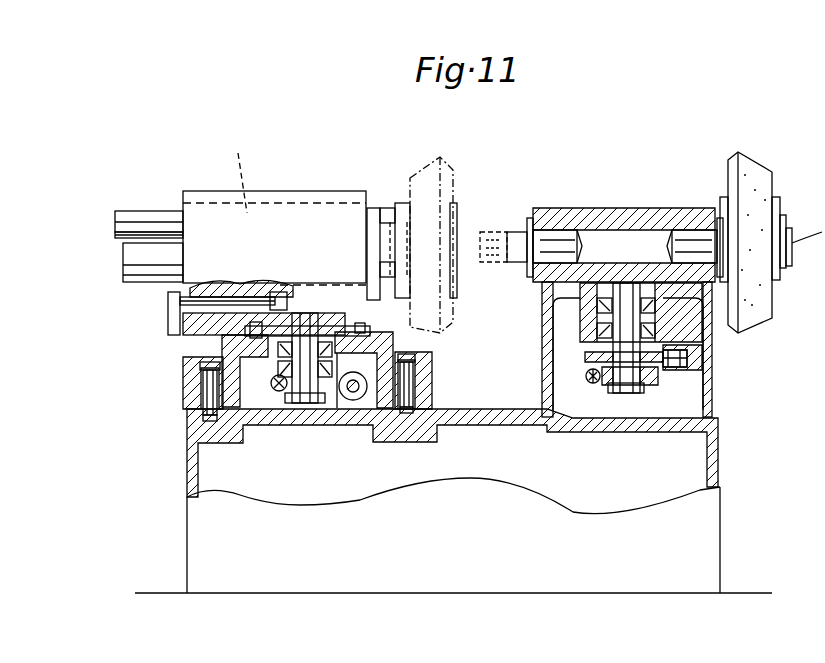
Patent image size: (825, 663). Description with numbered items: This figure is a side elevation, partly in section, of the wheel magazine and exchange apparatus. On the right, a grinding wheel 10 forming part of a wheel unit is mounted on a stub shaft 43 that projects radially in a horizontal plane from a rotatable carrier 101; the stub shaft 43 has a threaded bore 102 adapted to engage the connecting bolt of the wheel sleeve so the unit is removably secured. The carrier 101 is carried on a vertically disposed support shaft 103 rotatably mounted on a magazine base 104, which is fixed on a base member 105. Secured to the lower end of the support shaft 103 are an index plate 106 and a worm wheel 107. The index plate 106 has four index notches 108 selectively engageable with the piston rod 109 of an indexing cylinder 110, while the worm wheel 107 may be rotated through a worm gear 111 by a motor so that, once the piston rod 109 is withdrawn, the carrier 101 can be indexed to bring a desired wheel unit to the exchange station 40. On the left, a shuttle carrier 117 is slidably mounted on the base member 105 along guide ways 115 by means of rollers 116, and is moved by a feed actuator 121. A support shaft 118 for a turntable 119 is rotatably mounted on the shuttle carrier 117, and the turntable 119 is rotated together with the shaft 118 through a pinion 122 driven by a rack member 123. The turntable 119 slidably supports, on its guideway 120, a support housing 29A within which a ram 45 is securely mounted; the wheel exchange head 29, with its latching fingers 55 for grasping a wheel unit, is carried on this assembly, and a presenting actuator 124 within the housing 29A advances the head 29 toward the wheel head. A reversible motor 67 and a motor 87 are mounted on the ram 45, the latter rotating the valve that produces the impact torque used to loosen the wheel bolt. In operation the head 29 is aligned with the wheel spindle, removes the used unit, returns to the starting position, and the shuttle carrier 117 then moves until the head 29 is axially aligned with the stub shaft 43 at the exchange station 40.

The wheel 10 is at (758, 165).
The wheel exchange head 29 is at (270, 183).
The support casing 29A is at (210, 193).
The exchange station 40 is at (493, 276).
The stub shaft 43 is at (555, 242).
The ram 45 is at (239, 173).
The latching fingers 55 is at (386, 210).
The reversible motor 67 is at (124, 262).
The motor 87 is at (116, 221).
The rotatable carrier 101 is at (622, 225).
The threaded bore 102 is at (489, 274).
The support shaft 103 is at (626, 395).
The magazine base 104 is at (552, 397).
The base member 105 is at (210, 530).
The index plate 106 is at (597, 353).
The worm wheel 107 is at (655, 393).
The index notches 108 is at (585, 357).
The piston rod 109 is at (672, 350).
The indexing cylinder 110 is at (712, 360).
The worm gear 111 is at (586, 377).
The guide ways 115 is at (208, 406).
The rollers 116 is at (205, 387).
The shuttle carrier 117 is at (232, 347).
The support shaft 118 is at (302, 315).
The turntable 119 is at (185, 324).
The guideway 120 is at (175, 300).
The feed actuator 121 is at (360, 408).
The pinion 122 is at (318, 385).
The rack member 123 is at (280, 395).
The presenting actuator 124 is at (253, 283).